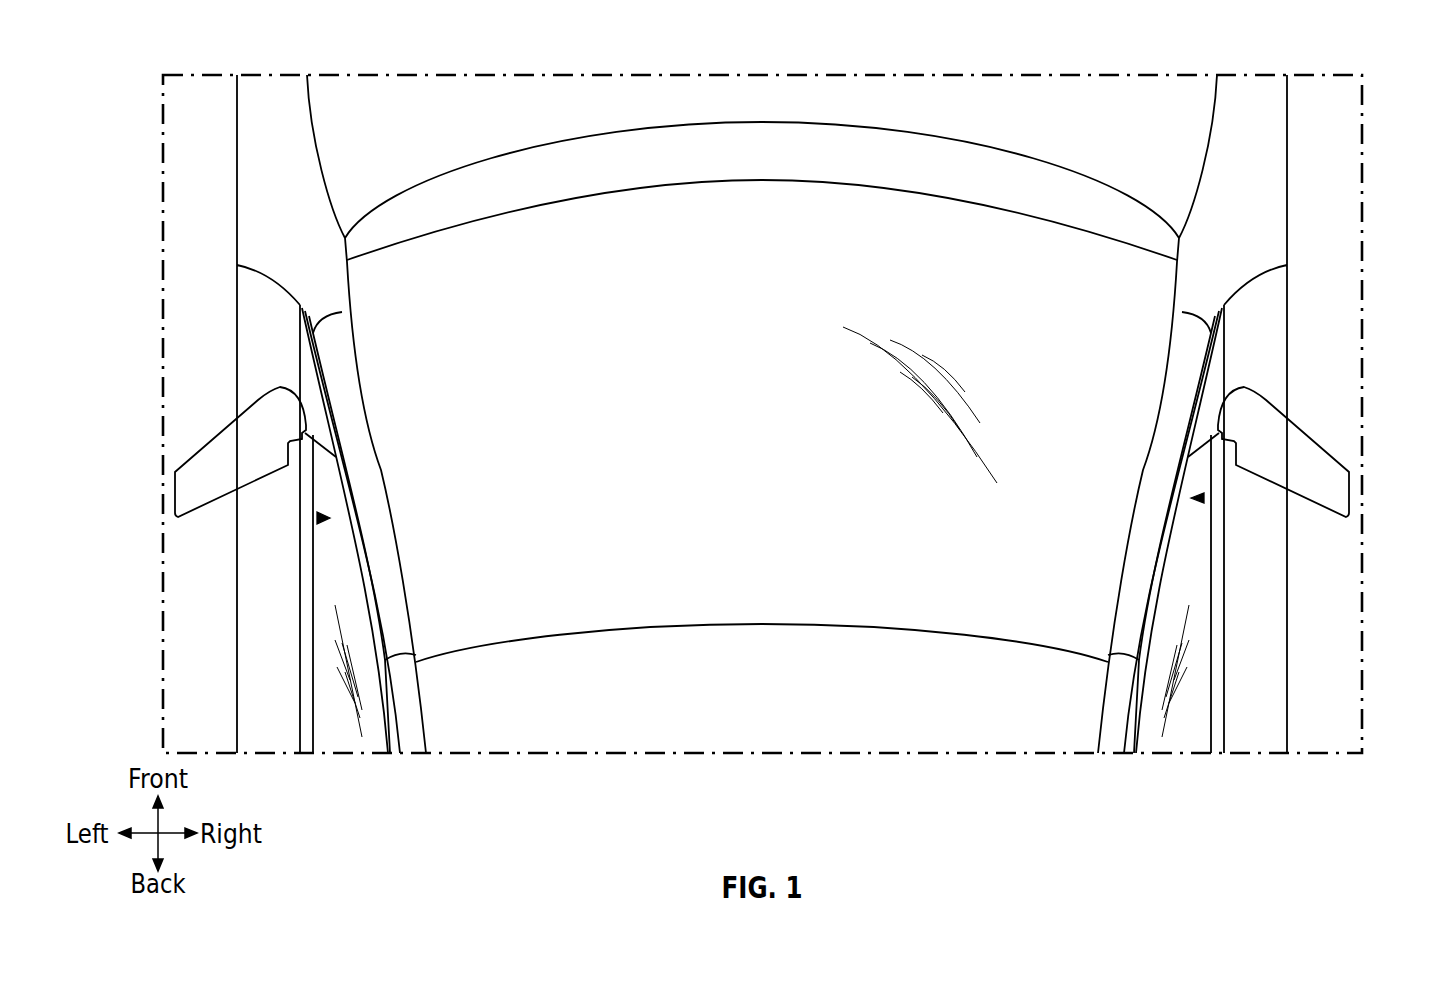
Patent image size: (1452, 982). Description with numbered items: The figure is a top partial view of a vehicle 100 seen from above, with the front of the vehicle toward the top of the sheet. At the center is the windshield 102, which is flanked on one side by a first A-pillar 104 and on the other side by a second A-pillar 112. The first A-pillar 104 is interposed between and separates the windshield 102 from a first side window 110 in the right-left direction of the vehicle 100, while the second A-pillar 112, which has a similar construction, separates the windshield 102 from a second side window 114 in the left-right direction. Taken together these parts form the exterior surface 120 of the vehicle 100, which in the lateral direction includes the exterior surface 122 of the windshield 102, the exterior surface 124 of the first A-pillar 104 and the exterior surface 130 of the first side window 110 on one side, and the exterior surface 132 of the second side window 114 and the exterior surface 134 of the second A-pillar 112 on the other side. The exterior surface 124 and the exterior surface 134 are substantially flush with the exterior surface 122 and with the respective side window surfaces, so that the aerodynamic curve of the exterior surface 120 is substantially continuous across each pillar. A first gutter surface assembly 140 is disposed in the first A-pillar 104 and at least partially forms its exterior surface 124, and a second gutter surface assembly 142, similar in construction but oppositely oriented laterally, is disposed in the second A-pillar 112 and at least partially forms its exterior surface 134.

The vehicle 100 is at (214, 557).
The windshield 102 is at (585, 577).
The first A-pillar 104 is at (388, 627).
The first side window 110 is at (325, 583).
The second A-pillar 112 is at (1138, 578).
The second side window 114 is at (1184, 649).
The exterior surface of the vehicle 120 is at (907, 417).
The exterior surface of the windshield 122 is at (577, 415).
The exterior surface of the first A-pillar 124 is at (342, 379).
The exterior surface of the first side window 130 is at (325, 552).
The exterior surface of the second side window 132 is at (1193, 538).
The exterior surface of the second A-pillar 134 is at (1170, 430).
The first gutter surface assembly 140 is at (320, 518).
The second gutter surface assembly 142 is at (1200, 498).